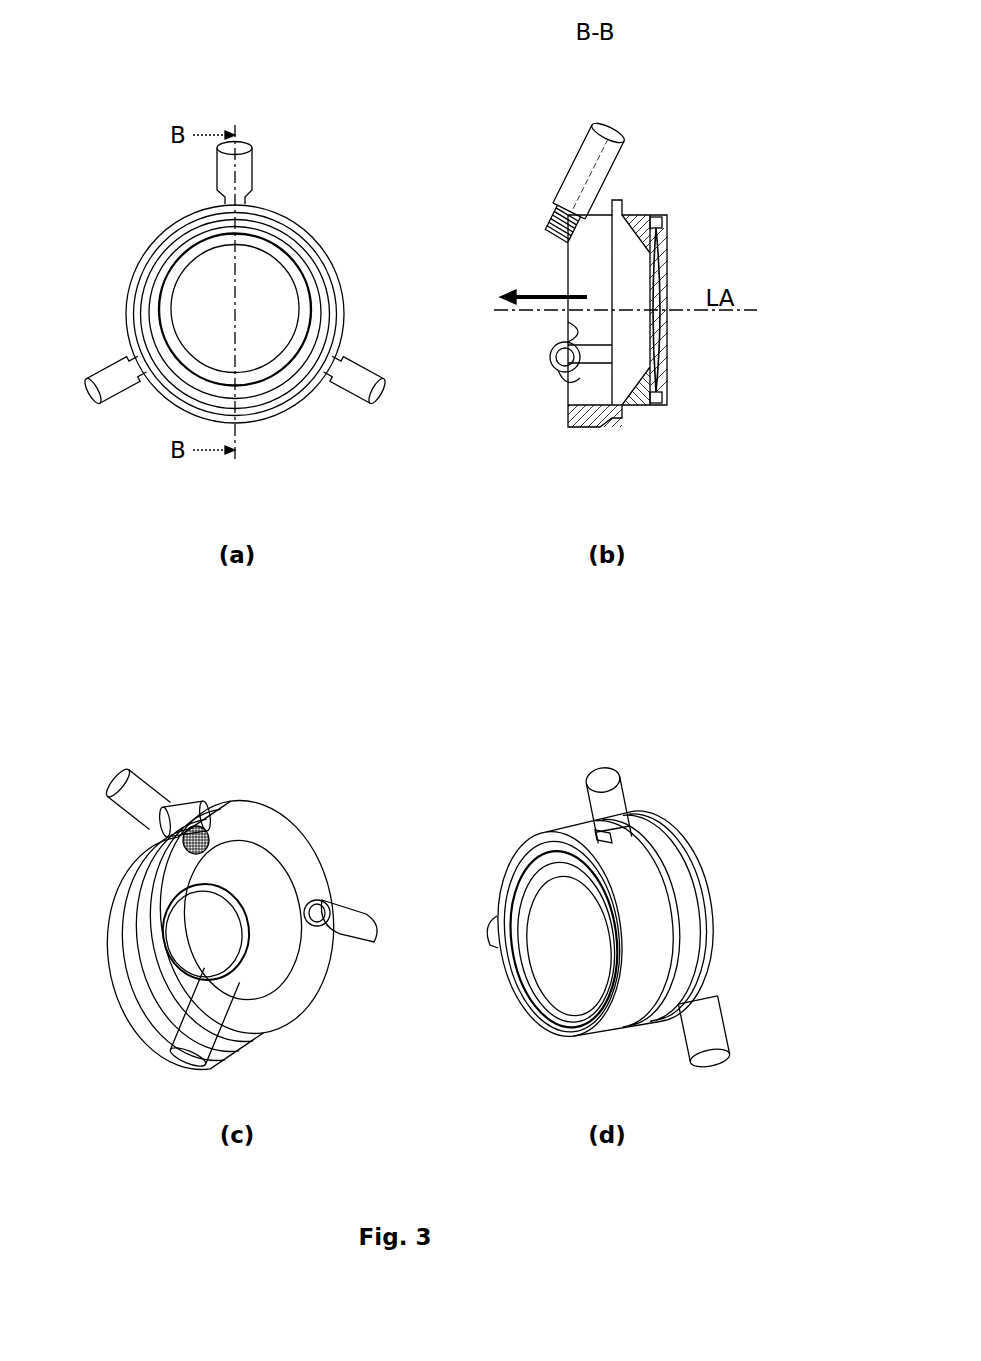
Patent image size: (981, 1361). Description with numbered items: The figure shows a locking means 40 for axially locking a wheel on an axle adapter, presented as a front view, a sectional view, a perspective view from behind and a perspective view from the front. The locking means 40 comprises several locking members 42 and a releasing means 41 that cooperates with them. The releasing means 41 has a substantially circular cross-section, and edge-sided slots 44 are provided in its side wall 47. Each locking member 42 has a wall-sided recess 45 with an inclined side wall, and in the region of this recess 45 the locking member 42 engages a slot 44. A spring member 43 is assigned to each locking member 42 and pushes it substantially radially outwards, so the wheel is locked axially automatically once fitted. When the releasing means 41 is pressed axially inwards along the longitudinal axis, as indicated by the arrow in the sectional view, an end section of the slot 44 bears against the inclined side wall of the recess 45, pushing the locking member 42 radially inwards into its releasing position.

The locking means 40 is at (510, 100).
The releasing means 41 is at (300, 233).
The locking member 42 is at (225, 167).
The spring member 43 is at (545, 230).
The slot 44 is at (605, 367).
The recess 45 is at (158, 812).
The side wall 47 is at (297, 400).